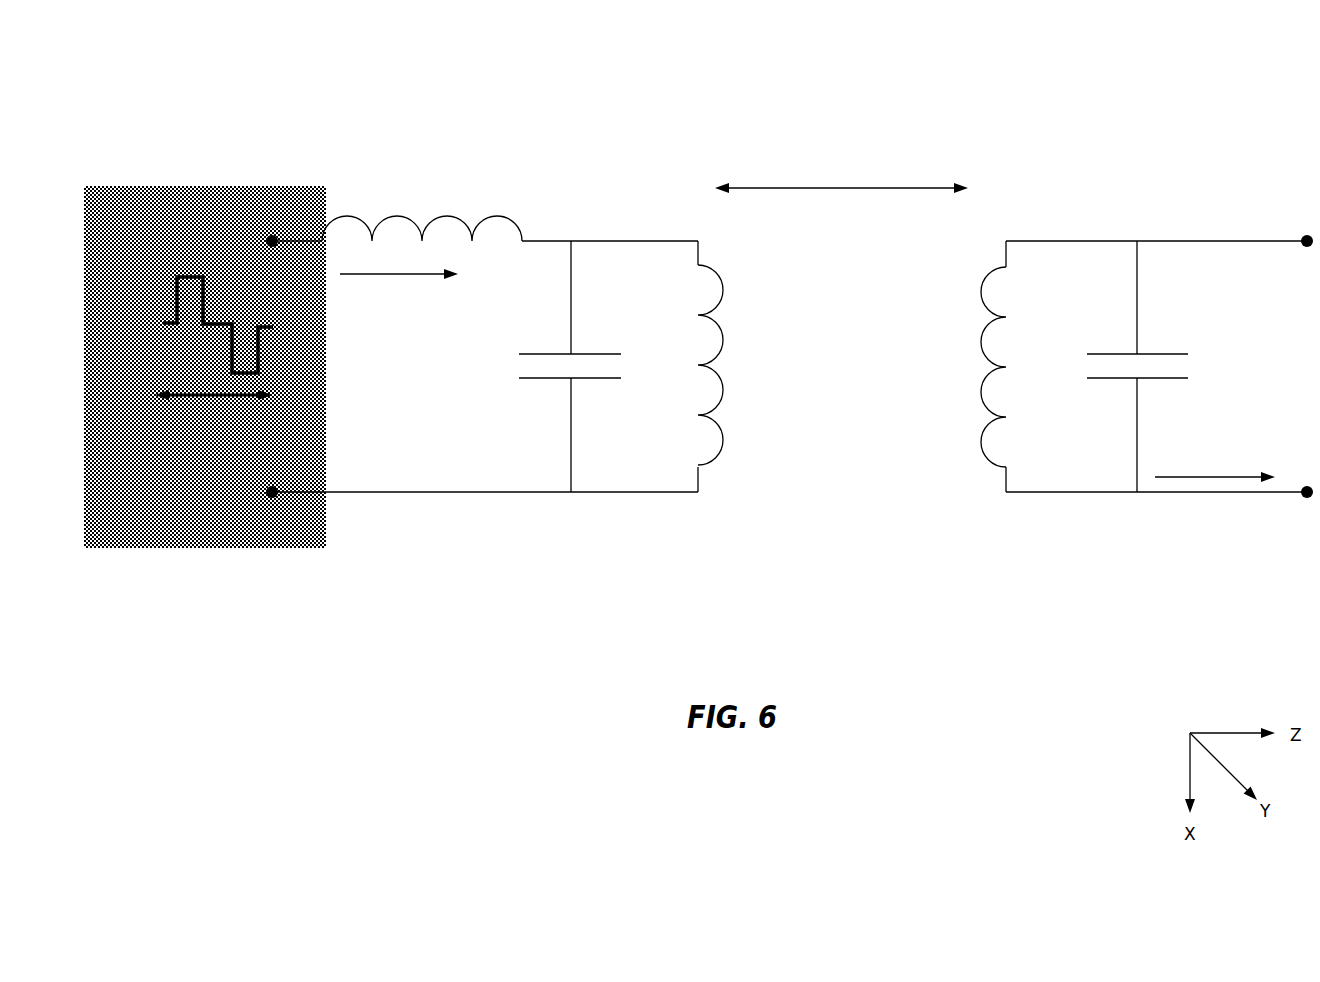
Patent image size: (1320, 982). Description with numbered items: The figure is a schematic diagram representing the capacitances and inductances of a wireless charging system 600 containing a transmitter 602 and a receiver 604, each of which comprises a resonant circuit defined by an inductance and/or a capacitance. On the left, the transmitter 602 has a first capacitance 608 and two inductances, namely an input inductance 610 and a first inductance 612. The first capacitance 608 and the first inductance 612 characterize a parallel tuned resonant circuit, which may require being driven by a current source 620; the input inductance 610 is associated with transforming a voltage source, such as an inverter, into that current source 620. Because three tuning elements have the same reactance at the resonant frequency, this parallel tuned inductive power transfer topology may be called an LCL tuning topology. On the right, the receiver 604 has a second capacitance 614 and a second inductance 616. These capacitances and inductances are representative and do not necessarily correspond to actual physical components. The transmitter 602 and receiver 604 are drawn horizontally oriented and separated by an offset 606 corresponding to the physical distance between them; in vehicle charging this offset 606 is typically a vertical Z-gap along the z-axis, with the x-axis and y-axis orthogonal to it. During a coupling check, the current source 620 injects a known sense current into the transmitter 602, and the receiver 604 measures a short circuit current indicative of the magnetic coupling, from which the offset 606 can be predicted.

The wireless charging system 600 is at (305, 92).
The transmitter 602 is at (454, 515).
The receiver 604 is at (1075, 505).
The offset 606 is at (841, 176).
The capacitance C1 608 is at (538, 366).
The inductance Lb 610 is at (422, 197).
The inductance L1 612 is at (743, 365).
The capacitance C2 614 is at (1175, 366).
The inductance L2 616 is at (955, 367).
The current source 620 is at (205, 367).